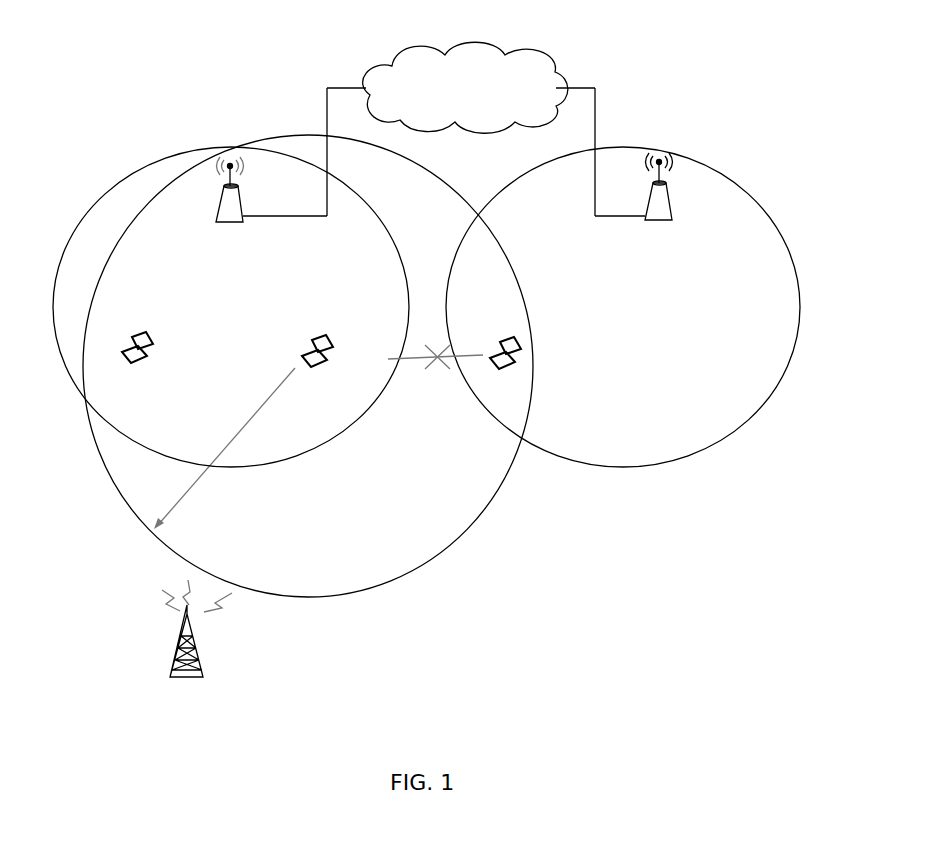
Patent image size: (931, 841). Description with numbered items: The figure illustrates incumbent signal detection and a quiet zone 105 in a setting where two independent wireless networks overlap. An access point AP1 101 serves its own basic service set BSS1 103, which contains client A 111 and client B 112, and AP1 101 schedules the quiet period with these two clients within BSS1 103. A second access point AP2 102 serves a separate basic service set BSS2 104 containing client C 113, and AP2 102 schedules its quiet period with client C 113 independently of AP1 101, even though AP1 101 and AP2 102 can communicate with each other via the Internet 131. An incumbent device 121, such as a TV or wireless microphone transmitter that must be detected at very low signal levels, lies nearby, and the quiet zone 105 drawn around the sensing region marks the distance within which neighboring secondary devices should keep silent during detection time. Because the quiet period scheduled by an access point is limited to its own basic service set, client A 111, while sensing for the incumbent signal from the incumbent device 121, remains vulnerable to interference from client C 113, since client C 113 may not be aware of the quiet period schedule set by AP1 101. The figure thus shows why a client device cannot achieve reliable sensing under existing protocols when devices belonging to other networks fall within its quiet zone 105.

The AP1 101 is at (222, 232).
The AP2 102 is at (660, 230).
The BSS1 103 is at (103, 197).
The BSS2 104 is at (733, 440).
The quiet zone 105 is at (384, 582).
The client A 111 is at (343, 340).
The client B 112 is at (157, 393).
The client C 113 is at (563, 387).
The incumbent device 121 is at (223, 665).
The Internet 131 is at (461, 45).